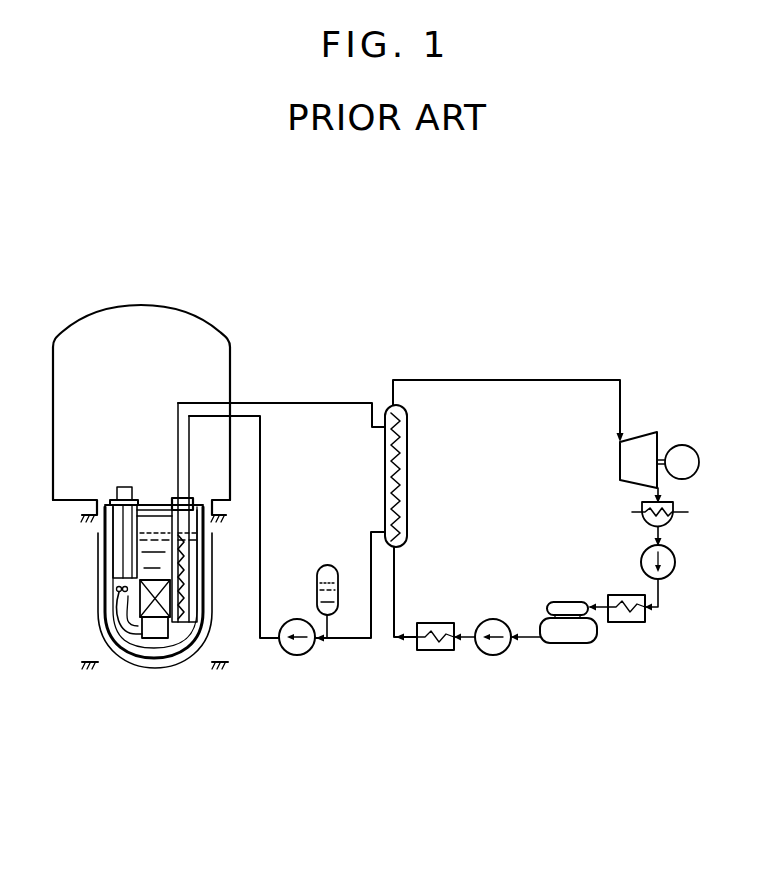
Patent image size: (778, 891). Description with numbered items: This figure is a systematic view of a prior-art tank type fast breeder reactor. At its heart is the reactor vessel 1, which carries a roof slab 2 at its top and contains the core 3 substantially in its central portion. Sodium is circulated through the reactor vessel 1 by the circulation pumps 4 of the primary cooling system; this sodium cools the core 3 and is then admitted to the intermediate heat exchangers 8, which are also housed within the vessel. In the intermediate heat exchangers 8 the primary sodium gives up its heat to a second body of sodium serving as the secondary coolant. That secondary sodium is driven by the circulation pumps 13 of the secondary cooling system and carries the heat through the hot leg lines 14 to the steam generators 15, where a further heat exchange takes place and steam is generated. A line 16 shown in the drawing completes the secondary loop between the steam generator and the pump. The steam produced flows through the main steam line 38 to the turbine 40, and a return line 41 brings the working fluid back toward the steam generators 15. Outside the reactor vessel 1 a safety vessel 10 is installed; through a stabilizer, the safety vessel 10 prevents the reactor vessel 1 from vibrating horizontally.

The reactor vessel 1 is at (178, 655).
The roof slab 2 is at (157, 508).
The core 3 is at (155, 610).
The circulation pump 4 is at (117, 497).
The intermediate heat exchanger 8 is at (173, 502).
The safety vessel 10 is at (94, 612).
The circulation pump 13 is at (308, 653).
The hot leg line 14 is at (297, 403).
The steam generator 15 is at (408, 468).
The secondary cold leg pipe 16 is at (256, 625).
The main steam line 38 is at (477, 380).
The turbine 40 is at (642, 433).
The return line 41 is at (395, 586).